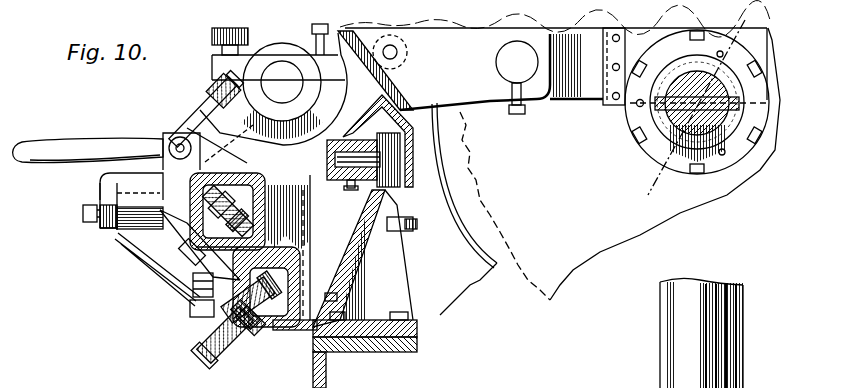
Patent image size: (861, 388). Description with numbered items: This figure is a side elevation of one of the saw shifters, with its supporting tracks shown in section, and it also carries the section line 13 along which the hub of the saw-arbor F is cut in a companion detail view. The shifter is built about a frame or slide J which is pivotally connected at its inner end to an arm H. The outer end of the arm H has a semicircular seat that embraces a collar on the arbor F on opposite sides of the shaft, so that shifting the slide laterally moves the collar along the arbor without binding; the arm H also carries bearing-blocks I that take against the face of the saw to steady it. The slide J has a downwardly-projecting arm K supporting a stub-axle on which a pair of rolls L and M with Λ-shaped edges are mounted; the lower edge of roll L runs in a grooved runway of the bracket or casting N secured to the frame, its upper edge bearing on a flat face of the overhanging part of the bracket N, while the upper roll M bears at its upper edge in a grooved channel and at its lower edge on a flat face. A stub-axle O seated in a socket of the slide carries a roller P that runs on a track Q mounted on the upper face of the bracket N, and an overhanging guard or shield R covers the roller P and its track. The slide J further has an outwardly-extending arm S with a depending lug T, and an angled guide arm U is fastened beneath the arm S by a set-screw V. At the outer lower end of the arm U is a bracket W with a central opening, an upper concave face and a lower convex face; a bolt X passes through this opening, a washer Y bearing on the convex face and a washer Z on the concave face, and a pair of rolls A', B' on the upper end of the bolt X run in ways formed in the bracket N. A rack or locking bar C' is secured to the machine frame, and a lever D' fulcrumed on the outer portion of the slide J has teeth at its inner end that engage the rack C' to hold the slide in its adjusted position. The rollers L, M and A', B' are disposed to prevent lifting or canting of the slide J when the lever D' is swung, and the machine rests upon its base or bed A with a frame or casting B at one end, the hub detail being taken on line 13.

The base or bed A is at (365, 350).
The roll A' is at (155, 323).
The frame or casting B is at (610, 173).
The roll B' is at (329, 299).
The rack or locking bar C' is at (208, 110).
The lever D' is at (88, 135).
The saw-arbor F is at (757, 185).
The bearing ring G' is at (691, 109).
The arm H is at (637, 50).
The bearing-blocks I is at (510, 70).
The frame or slide J is at (368, 88).
The downwardly-projecting arm K is at (190, 217).
The roll L is at (205, 192).
The roll M is at (250, 222).
The bracket or casting N is at (302, 217).
The stub-axle O is at (328, 152).
The roller P is at (411, 212).
The track Q is at (363, 258).
The overhanging guard or shield R is at (440, 143).
The outwardly-extending arm S is at (135, 195).
The depending lug T is at (110, 228).
The guide arm U is at (165, 268).
The set-screw V is at (86, 218).
The bracket W is at (192, 310).
The bolt X is at (247, 335).
The washer Y is at (205, 340).
The washer Z is at (238, 327).
The section line 13- 13 is at (648, 193).